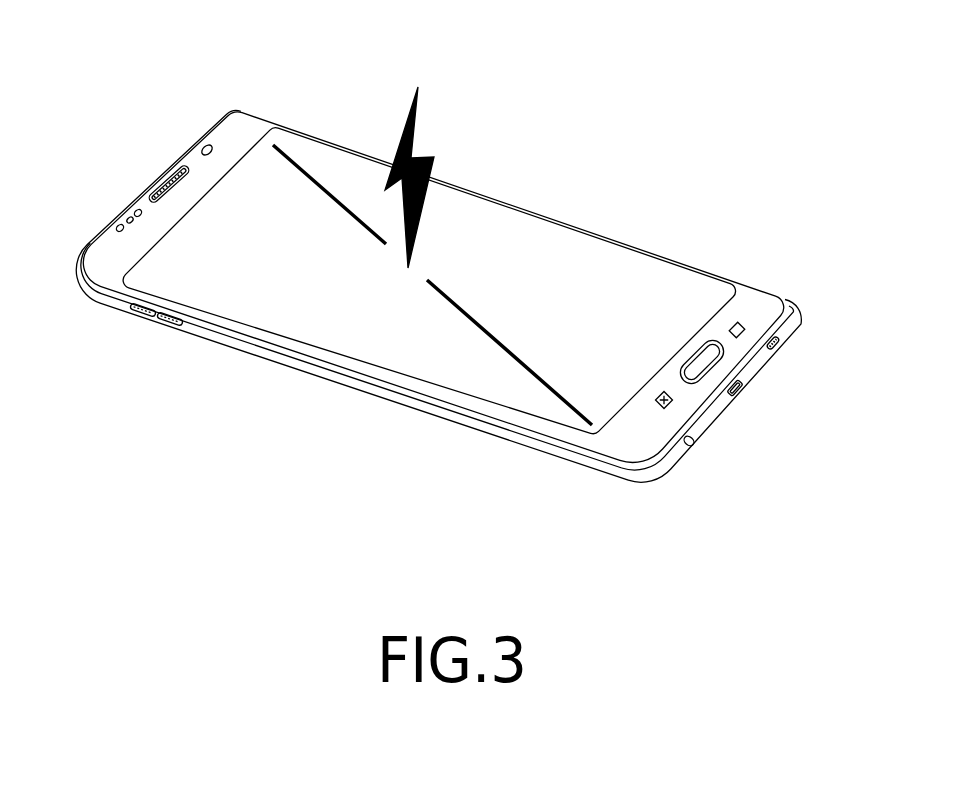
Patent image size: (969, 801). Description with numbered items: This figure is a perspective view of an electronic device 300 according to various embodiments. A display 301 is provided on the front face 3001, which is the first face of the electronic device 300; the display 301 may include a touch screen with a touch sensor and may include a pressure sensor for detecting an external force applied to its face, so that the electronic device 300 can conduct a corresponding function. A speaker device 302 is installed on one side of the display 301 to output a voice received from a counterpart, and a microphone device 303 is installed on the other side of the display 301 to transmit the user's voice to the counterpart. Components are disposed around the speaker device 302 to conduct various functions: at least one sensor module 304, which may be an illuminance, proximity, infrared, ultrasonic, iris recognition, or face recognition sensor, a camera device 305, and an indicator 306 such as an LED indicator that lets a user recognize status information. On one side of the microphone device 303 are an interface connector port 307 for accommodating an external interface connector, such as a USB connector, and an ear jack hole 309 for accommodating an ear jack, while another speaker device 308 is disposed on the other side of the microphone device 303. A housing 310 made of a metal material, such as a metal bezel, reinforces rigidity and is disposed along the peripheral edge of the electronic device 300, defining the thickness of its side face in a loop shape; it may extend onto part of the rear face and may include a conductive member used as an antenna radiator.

The electronic device 300 is at (510, 94).
The display 301 is at (565, 250).
The speaker device 302 is at (173, 166).
The microphone device 303 is at (762, 368).
The sensor module 304 is at (136, 211).
The camera device 305 is at (212, 146).
The indicator 306 is at (117, 227).
The interface connector port 307 is at (739, 394).
The speaker device 308 is at (784, 352).
The ear jack hole 309 is at (693, 446).
The housing 310 is at (327, 372).
The front face 3001 is at (252, 143).